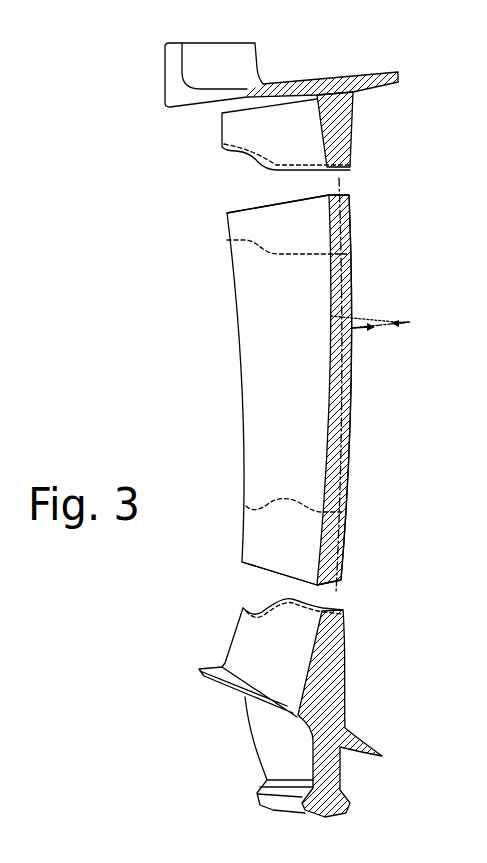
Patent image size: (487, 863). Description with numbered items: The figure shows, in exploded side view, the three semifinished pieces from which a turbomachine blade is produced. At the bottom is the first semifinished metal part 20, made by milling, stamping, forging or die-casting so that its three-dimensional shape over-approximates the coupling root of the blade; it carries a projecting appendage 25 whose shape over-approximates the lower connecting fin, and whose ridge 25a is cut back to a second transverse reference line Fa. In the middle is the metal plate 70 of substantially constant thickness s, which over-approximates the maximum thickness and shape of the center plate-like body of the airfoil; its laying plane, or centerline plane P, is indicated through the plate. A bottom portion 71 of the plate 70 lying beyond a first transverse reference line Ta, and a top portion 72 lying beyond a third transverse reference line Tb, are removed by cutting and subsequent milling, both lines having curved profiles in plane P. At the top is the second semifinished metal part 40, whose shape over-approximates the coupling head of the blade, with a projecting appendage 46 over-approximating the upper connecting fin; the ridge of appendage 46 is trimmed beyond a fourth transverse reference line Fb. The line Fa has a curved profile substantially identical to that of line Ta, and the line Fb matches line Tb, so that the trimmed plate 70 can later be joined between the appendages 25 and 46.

The second semifinished metal part 40 is at (307, 76).
The projecting appendage 46 is at (342, 133).
The fourth transverse reference line Fb is at (242, 160).
The metal plate 70 is at (265, 365).
The top portion of plate 72 is at (272, 227).
The bottom portion of plate 71 is at (272, 543).
The third transverse reference line Tb is at (267, 253).
The first transverse reference line Ta is at (250, 505).
The laying plane/centerline plane P is at (341, 380).
The thickness s is at (370, 332).
The projecting appendage 25 is at (329, 657).
The ridge 25a is at (323, 608).
The second transverse reference line Fa is at (243, 607).
The first semifinished metal part 20 is at (273, 748).